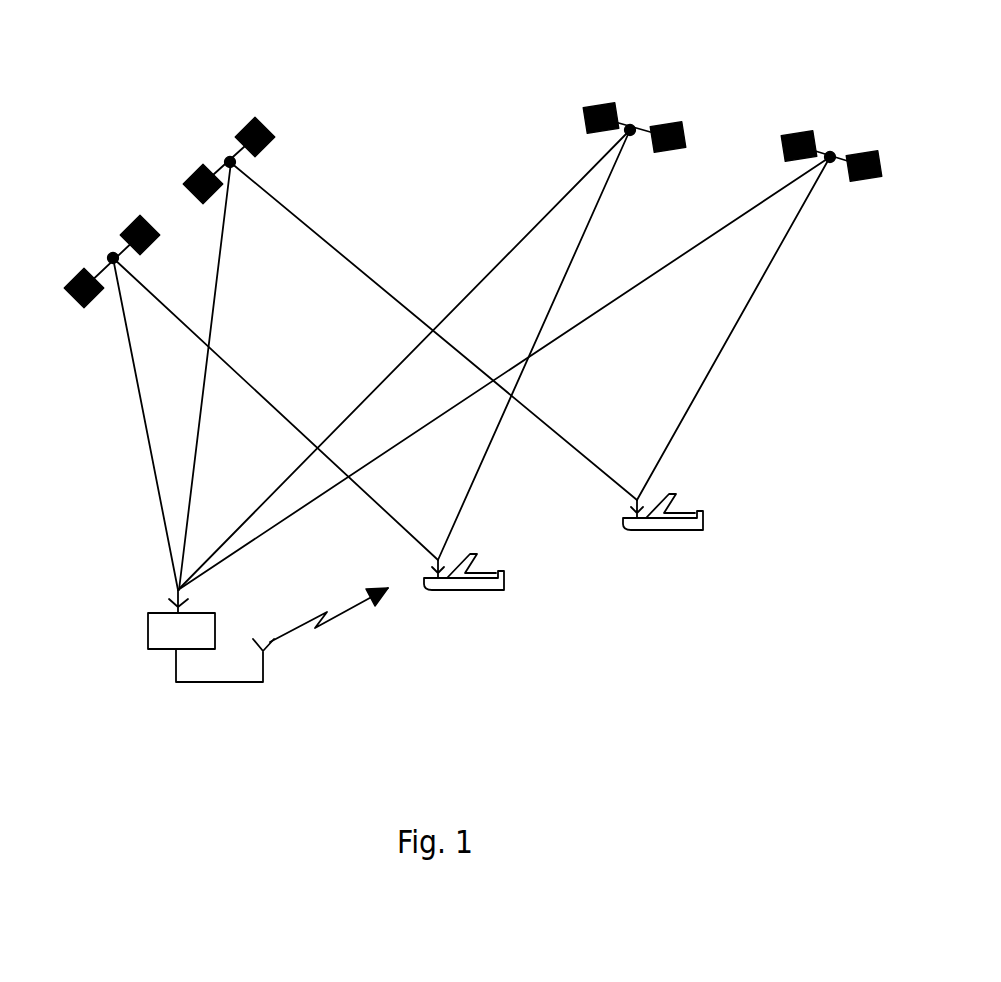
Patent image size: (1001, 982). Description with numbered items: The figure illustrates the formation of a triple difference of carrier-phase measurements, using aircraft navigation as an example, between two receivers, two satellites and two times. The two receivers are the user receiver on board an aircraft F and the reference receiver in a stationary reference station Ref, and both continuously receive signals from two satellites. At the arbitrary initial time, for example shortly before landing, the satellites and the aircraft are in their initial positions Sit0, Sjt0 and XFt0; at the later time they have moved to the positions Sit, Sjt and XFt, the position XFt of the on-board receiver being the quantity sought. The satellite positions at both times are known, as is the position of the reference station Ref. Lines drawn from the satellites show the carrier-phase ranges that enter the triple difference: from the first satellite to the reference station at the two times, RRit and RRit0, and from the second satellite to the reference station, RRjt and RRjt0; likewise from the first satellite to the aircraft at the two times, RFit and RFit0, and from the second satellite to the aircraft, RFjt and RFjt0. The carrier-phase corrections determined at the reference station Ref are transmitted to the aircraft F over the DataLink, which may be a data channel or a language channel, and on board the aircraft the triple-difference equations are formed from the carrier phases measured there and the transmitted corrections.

The satellite S_i at time t Sit is at (108, 253).
The satellite S_i at initial time t0 Sit0 is at (228, 160).
The satellite S_j at time t Sjt is at (627, 128).
The satellite S_j at initial time t0 Sjt0 is at (828, 152).
The range from satellite S_i to reference station at time t RRit is at (142, 410).
The range from satellite S_i to reference station at time t0 RRit0 is at (227, 220).
The range from satellite S_j to reference station at time t RRjt is at (243, 530).
The range from satellite S_j to reference station at time t0 RRjt0 is at (653, 272).
The range from satellite S_i to aircraft at time t RFit is at (372, 498).
The range from satellite S_i to aircraft at time t0 RFit0 is at (388, 292).
The range from satellite S_j to aircraft at time t RFjt is at (492, 445).
The range from satellite S_j to aircraft at time t0 RFjt0 is at (728, 338).
The aircraft F is at (571, 550).
The position of on-board receiver at time t XFt is at (448, 637).
The position of on-board receiver at initial time t0 XFt0 is at (657, 580).
The stationary reference station Ref is at (211, 636).
The data link DataLink is at (335, 620).